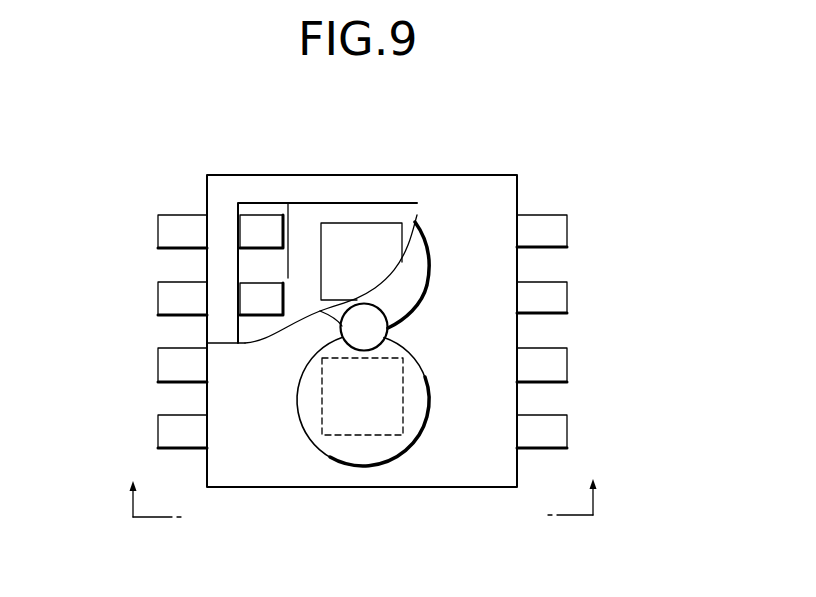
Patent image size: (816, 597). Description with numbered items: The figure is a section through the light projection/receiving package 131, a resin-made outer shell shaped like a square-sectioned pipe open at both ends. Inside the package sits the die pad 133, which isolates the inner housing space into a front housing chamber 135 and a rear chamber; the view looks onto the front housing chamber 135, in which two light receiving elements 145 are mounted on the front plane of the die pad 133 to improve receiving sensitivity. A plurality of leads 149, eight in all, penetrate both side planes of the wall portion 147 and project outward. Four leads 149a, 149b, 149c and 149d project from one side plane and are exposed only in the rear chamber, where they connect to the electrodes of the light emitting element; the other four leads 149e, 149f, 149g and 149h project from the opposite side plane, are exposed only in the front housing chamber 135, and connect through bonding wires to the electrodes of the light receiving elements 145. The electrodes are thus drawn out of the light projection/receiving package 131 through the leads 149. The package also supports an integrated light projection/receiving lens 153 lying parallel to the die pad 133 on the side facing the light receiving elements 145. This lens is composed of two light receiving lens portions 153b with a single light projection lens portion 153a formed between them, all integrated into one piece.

The light projection/receiving package 131 is at (600, 120).
The die pad 133 is at (408, 217).
The front housing chamber 135 is at (288, 276).
The light receiving element 145 is at (360, 223).
The wall portion 147 is at (222, 189).
The leads 149 is at (700, 220).
The lead 149a is at (567, 225).
The lead 149b is at (567, 297).
The lead 149c is at (567, 362).
The lead 149d is at (567, 430).
The lead 149e is at (158, 231).
The lead 149f is at (158, 297).
The lead 149g is at (158, 362).
The lead 149h is at (158, 428).
The integrated light projection/receiving lens 153 is at (270, 470).
The light projection lens portion 153a is at (373, 328).
The light receiving lens portion 153b is at (427, 243).